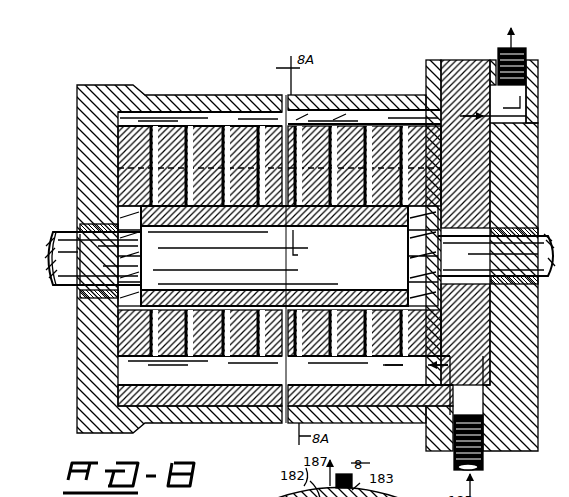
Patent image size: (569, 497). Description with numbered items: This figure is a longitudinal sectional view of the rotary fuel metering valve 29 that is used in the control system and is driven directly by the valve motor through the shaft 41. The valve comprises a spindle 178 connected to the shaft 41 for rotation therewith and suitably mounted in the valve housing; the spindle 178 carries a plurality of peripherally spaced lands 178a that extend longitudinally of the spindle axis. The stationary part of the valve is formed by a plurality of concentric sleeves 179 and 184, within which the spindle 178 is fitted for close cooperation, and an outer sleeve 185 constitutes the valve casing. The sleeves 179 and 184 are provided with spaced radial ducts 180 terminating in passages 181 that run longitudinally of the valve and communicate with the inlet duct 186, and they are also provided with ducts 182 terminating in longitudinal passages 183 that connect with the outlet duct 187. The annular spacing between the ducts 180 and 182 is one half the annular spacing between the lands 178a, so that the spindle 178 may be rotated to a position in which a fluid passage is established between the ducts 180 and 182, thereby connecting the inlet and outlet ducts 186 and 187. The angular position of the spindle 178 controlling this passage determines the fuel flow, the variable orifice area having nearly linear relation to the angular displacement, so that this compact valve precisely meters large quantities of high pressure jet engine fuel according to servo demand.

The rotary fuel metering valve 29 is at (67, 126).
The shaft 41 is at (541, 270).
The spindle 178 is at (178, 228).
The lands 178a is at (292, 284).
The concentric sleeve 179 is at (115, 182).
The radial ducts 180 is at (167, 335).
The longitudinal passages 181 is at (230, 365).
The ducts 182 is at (188, 110).
The longitudinal passages 183 is at (240, 104).
The concentric sleeve 184 is at (306, 118).
The outer sleeve 185 is at (162, 88).
The inlet duct 186 is at (477, 448).
The outlet duct 187 is at (550, 33).